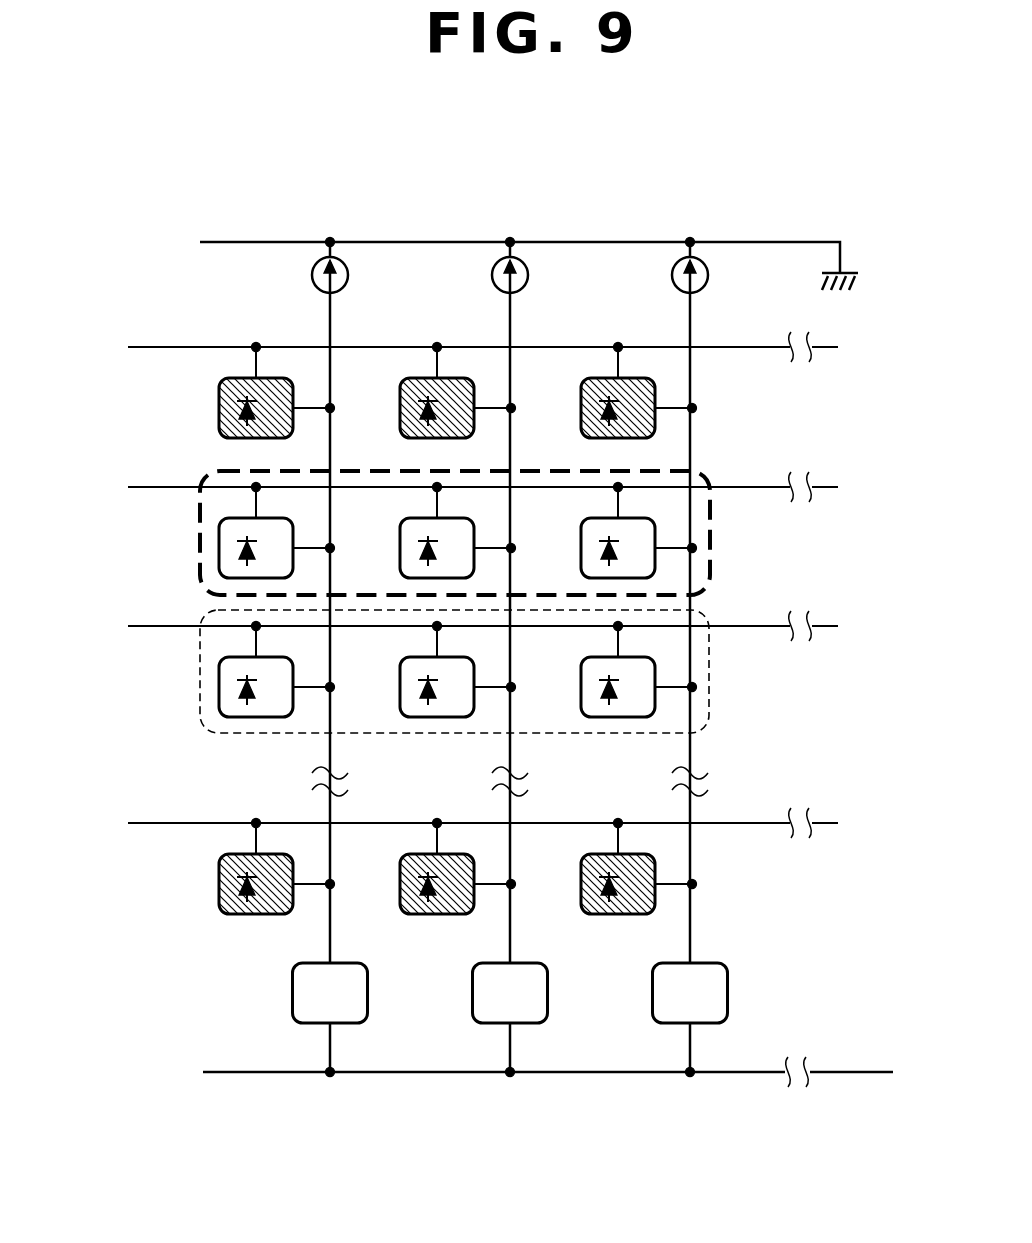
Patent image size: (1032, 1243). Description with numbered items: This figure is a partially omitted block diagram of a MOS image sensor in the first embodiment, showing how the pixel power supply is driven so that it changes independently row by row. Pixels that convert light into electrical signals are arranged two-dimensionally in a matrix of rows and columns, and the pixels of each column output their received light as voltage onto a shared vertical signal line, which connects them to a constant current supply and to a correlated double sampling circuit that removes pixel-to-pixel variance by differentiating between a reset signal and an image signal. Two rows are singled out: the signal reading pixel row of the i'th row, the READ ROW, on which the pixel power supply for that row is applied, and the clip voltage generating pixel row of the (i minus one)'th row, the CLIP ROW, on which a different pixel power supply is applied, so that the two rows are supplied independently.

The clip voltage generating pixel row CLIP ROW is at (541, 533).
The signal reading pixel row READ ROW is at (534, 671).